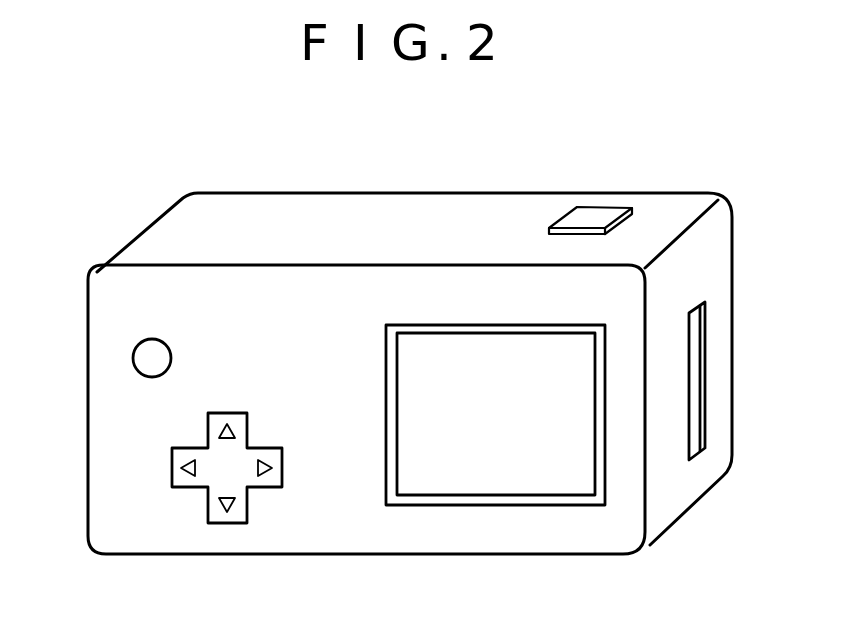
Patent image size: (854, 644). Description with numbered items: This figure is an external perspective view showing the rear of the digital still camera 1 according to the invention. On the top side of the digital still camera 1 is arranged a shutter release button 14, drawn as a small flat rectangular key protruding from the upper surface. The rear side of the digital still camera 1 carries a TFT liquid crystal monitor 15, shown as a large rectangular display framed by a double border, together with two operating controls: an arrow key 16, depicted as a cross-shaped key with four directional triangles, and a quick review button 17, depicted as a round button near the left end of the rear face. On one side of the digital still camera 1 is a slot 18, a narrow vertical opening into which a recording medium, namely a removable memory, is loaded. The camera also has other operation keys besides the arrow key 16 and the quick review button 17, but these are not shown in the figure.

The digital still camera 1 is at (446, 192).
The shutter release button 14 is at (594, 213).
The TFT liquid crystal monitor 15 is at (470, 505).
The arrow key 16 is at (227, 523).
The quick review button 17 is at (133, 358).
The slot 18 is at (706, 370).